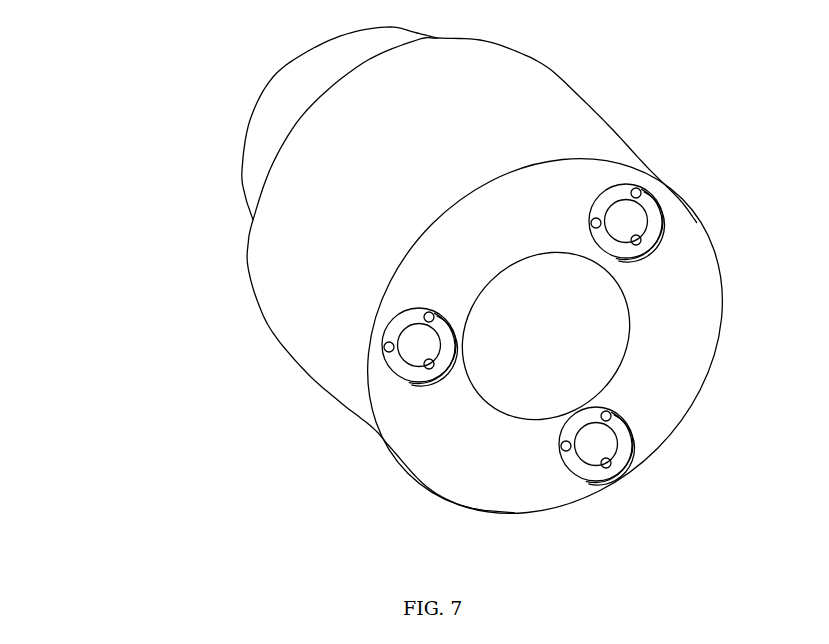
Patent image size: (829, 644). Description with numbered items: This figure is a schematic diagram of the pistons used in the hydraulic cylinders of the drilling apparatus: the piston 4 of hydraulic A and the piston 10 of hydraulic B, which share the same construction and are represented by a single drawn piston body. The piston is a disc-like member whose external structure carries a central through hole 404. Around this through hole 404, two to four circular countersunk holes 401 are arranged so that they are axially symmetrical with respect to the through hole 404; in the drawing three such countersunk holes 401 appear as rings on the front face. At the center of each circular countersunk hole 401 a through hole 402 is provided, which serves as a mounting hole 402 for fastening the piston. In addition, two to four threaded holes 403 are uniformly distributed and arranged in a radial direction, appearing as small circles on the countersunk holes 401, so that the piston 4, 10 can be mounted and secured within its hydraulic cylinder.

The piston of hydraulic A 4 is at (223, 237).
The piston of hydraulic B 10 is at (518, 306).
The countersunk hole 401 is at (600, 247).
The mounting hole 402 is at (624, 222).
The threaded hole 403 is at (640, 236).
The through hole 404 is at (548, 333).